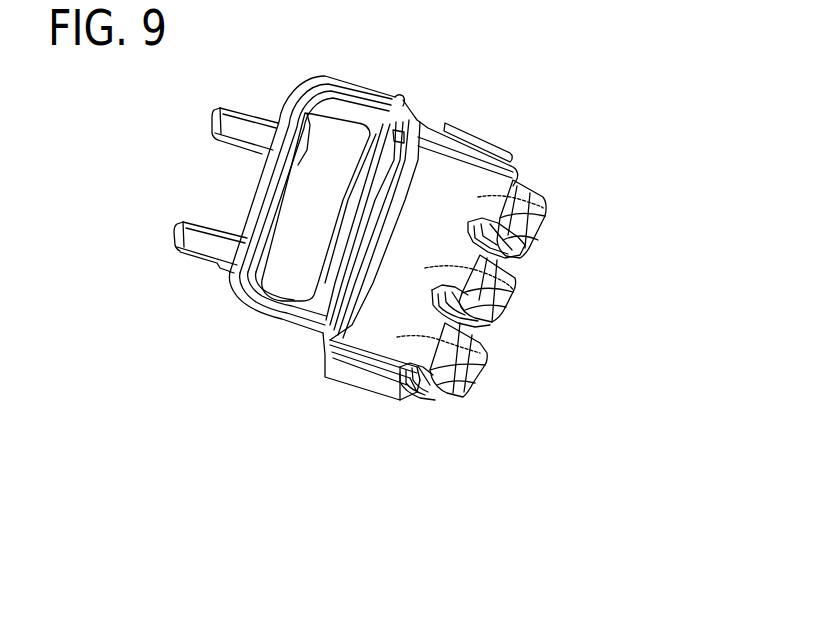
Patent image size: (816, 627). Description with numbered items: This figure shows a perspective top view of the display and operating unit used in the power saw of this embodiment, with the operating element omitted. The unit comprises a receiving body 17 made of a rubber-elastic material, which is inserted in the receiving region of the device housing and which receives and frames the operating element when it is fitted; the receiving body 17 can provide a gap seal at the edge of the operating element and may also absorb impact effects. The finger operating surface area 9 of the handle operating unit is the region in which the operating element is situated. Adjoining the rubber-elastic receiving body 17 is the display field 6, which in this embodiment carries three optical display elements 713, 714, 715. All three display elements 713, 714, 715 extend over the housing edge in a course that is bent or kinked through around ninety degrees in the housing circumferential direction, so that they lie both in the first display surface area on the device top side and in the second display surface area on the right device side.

The display field 6 is at (457, 182).
The finger operating surface area 9 is at (240, 300).
The receiving body 17 is at (387, 96).
The display element 715 is at (564, 229).
The display element 714 is at (520, 296).
The display element 713 is at (491, 363).